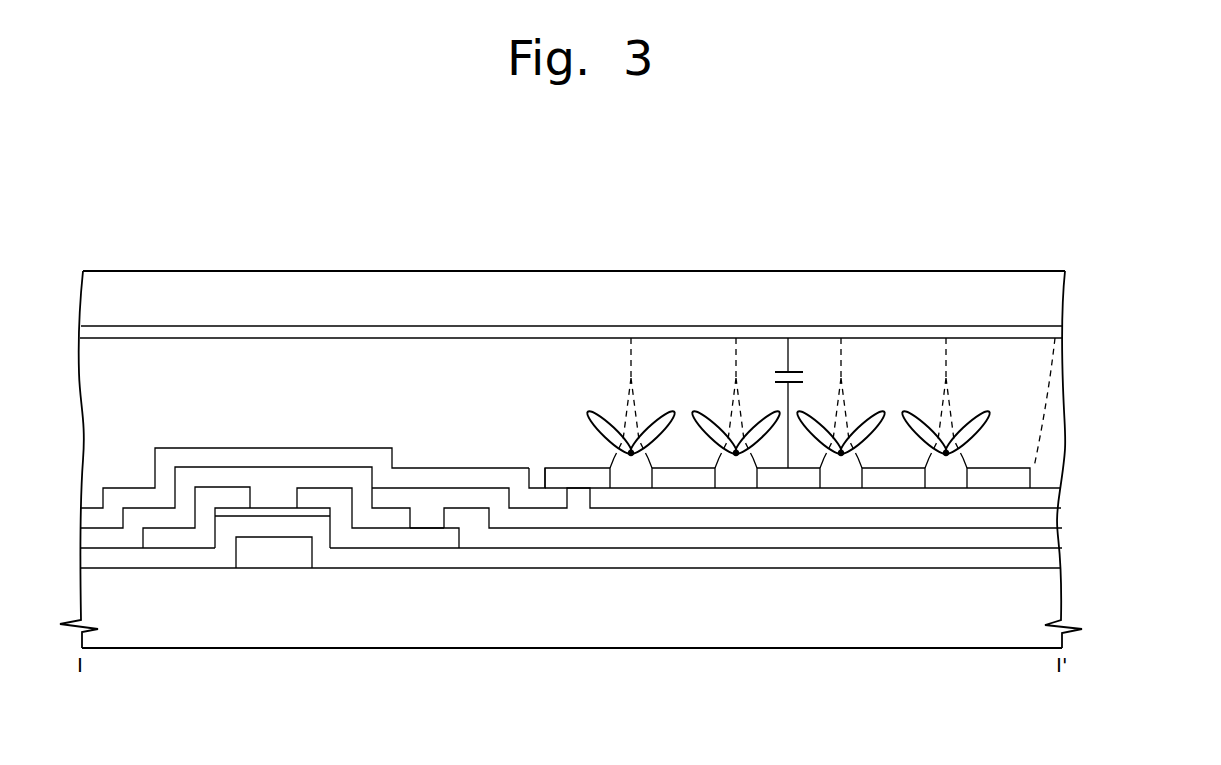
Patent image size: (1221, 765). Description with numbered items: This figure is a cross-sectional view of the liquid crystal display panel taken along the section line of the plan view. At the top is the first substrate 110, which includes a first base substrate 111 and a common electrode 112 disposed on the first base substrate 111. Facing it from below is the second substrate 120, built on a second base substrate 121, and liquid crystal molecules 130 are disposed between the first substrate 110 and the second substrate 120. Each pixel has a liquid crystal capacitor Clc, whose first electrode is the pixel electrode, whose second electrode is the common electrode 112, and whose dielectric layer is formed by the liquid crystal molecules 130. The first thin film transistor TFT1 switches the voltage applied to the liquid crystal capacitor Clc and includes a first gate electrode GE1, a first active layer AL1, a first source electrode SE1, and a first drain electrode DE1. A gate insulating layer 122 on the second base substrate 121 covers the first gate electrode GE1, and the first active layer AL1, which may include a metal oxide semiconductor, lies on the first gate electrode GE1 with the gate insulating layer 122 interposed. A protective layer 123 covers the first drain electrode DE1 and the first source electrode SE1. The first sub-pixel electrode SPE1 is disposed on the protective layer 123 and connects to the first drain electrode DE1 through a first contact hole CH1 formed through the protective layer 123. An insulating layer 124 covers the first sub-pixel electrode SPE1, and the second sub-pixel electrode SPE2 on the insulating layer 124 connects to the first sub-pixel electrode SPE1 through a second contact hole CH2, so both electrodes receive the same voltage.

The first substrate 110 is at (640, 311).
The first base substrate 111 is at (1050, 291).
The common electrode 112 is at (1050, 331).
The liquid crystal molecules 130 is at (985, 418).
The liquid crystal capacitor Clc is at (774, 403).
The second substrate 120 is at (640, 575).
The second base substrate 121 is at (610, 588).
The gate insulating layer 122 is at (1050, 556).
The protective layer 123 is at (1050, 538).
The insulating layer 124 is at (1050, 497).
The first sub-pixel electrode SPE1 is at (640, 521).
The second sub-pixel electrode SPE2 is at (797, 478).
The first contact hole CH1 is at (410, 518).
The second contact hole CH2 is at (567, 497).
The first thin film transistor TFT1 is at (301, 617).
The first source electrode SE1 is at (187, 543).
The first gate electrode GE1 is at (252, 560).
The first active layer AL1 is at (300, 512).
The first drain electrode DE1 is at (378, 595).